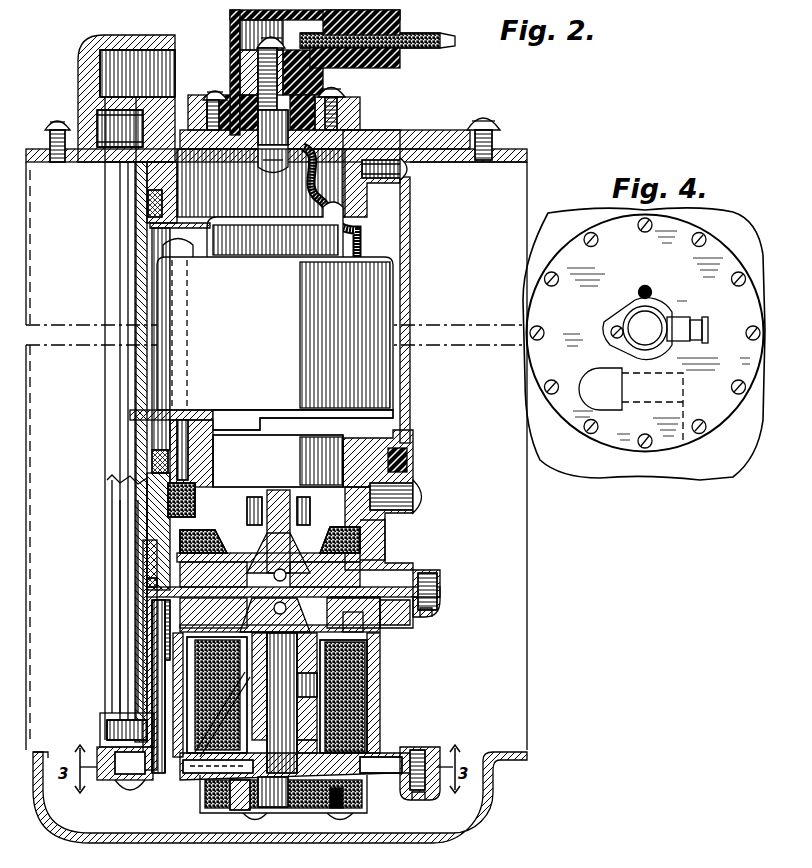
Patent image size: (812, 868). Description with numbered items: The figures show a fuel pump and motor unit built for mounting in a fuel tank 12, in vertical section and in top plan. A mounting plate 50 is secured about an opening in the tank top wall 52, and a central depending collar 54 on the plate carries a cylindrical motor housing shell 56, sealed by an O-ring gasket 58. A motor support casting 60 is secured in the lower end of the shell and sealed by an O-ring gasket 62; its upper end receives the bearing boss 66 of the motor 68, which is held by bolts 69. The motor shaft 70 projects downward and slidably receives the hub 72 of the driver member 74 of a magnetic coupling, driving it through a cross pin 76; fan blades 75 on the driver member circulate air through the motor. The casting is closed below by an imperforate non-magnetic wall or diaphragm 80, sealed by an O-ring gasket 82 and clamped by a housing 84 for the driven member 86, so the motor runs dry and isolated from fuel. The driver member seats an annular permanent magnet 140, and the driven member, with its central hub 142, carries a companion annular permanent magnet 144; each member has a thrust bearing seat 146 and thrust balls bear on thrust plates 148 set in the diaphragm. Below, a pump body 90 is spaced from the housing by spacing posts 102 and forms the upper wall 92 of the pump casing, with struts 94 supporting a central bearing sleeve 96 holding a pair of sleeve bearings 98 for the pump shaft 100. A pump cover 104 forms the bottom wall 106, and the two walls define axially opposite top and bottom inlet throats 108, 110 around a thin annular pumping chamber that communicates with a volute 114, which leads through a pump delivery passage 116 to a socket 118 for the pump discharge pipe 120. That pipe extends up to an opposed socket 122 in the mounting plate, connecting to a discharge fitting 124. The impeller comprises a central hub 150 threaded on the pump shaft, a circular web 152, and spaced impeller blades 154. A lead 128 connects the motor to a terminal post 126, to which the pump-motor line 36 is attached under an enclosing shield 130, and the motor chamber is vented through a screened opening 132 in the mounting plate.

In FIG. 2, the fuel tank 12 is at (513, 188).
In FIG. 2, the pump-motor line 36 is at (425, 40).
In FIG. 2, the mounting plate 50 is at (500, 132).
In FIG. 4, the mounting plate 50 is at (628, 437).
In FIG. 2, the top wall 52 is at (529, 154).
In FIG. 4, the top wall 52 is at (653, 478).
In FIG. 2, the central depending collar 54 is at (410, 190).
In FIG. 2, the cylindrical motor housing shell 56 is at (410, 272).
In FIG. 2, the O-ring gasket 58 is at (410, 208).
In FIG. 2, the motor support casting 60 is at (418, 524).
In FIG. 2, the O-ring gasket 62 is at (408, 462).
In FIG. 2, the bearing boss 66 is at (313, 458).
In FIG. 2, the motor 68 is at (261, 311).
In FIG. 2, the bolts 69 is at (182, 429).
In FIG. 2, the motor shaft 70 is at (287, 501).
In FIG. 2, the hub 72 is at (247, 543).
In FIG. 2, the driver member 74 is at (373, 559).
In FIG. 2, the fan blades 75 is at (373, 542).
In FIG. 2, the cross pin 76 is at (247, 514).
In FIG. 2, the imperforate wall or diaphragm 80 is at (440, 595).
In FIG. 2, the O-ring gasket 82 is at (147, 584).
In FIG. 2, the housing 84 is at (390, 633).
In FIG. 2, the driven member 86 is at (398, 642).
In FIG. 2, the pump body 90 is at (432, 750).
In FIG. 2, the upper wall 92 is at (383, 755).
In FIG. 2, the struts 94 is at (233, 709).
In FIG. 2, the central bearing sleeve 96 is at (317, 705).
In FIG. 2, the sleeve bearings 98 is at (367, 667).
In FIG. 2, the pump shaft 100 is at (345, 692).
In FIG. 2, the spacing posts 102 is at (147, 705).
In FIG. 2, the pump cover 104 is at (437, 790).
In FIG. 2, the bottom wall 106 is at (392, 782).
In FIG. 2, the top inlet throat 108 is at (305, 750).
In FIG. 2, the bottom inlet throat 110 is at (295, 787).
In FIG. 4, the volute 114 is at (658, 434).
In FIG. 2, the pump delivery passage 116 is at (110, 762).
In FIG. 2, the socket 118 is at (110, 735).
In FIG. 2, the pump discharge pipe 120 is at (110, 200).
In FIG. 2, the socket 122 is at (97, 128).
In FIG. 2, the discharge fitting 124 is at (78, 63).
In FIG. 4, the discharge fitting 124 is at (592, 400).
In FIG. 2, the terminal post 126 is at (272, 165).
In FIG. 2, the lead 128 is at (405, 227).
In FIG. 2, the enclosing shield 130 is at (353, 68).
In FIG. 4, the enclosing shield 130 is at (683, 323).
In FIG. 4, the screened opening 132 is at (663, 273).
In FIG. 2, the annular permanent magnet 140 is at (187, 572).
In FIG. 2, the central hub 142 is at (211, 695).
In FIG. 2, the companion annular permanent magnet 144 is at (182, 614).
In FIG. 2, the thrust bearing seat 146 is at (310, 545).
In FIG. 2, the thrust plates 148 is at (157, 642).
In FIG. 2, the central hub 150 is at (273, 777).
In FIG. 2, the circular web 152 is at (240, 782).
In FIG. 2, the impeller blades 154 is at (197, 781).